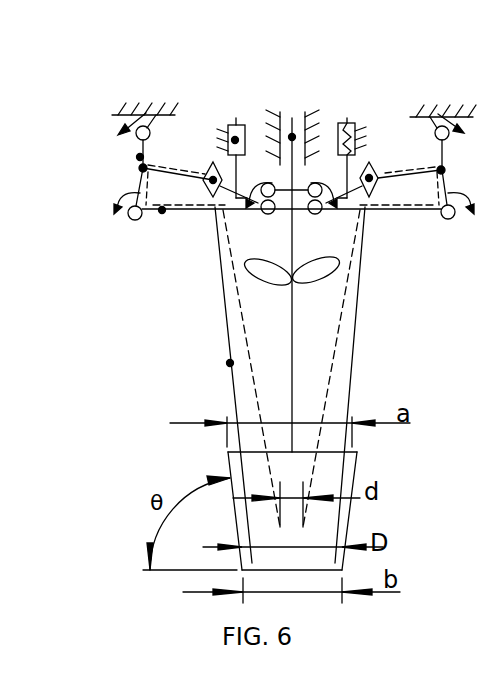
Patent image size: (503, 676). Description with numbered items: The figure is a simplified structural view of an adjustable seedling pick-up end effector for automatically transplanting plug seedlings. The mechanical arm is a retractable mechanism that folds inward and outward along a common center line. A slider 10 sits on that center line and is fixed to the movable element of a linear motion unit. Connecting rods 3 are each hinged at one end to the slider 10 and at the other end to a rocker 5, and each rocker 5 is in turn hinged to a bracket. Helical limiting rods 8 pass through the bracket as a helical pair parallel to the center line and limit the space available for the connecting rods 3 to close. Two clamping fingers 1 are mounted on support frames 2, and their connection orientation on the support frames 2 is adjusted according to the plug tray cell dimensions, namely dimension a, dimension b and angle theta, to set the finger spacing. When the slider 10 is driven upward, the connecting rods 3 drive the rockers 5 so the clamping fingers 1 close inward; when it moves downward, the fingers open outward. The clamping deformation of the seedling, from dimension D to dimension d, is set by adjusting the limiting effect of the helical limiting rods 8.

The clamping finger 1 is at (230, 363).
The support frame 2 is at (213, 180).
The connecting rod 3 is at (137, 191).
The rocker 5 is at (140, 157).
The helical limiting rod 8 is at (235, 140).
The slider 10 is at (292, 137).